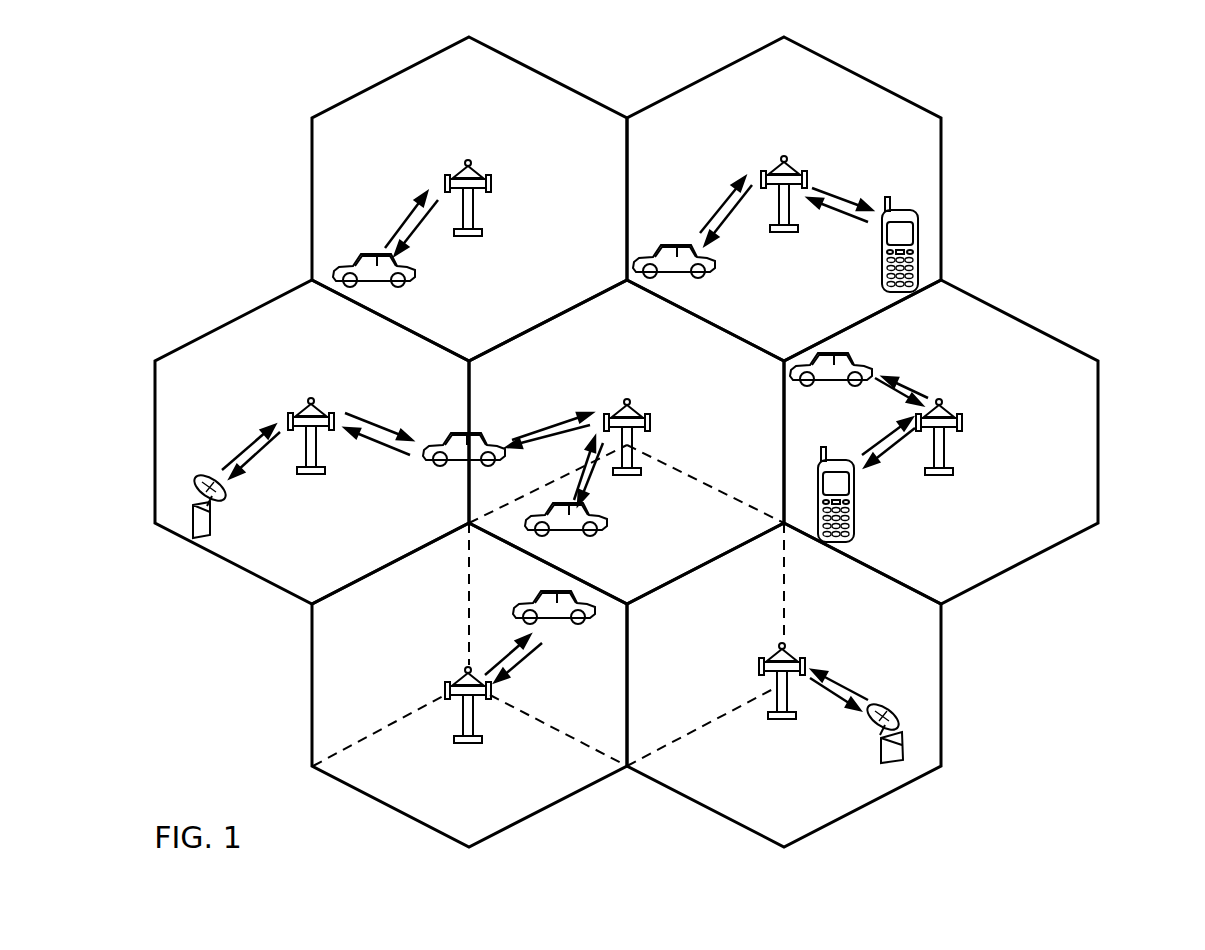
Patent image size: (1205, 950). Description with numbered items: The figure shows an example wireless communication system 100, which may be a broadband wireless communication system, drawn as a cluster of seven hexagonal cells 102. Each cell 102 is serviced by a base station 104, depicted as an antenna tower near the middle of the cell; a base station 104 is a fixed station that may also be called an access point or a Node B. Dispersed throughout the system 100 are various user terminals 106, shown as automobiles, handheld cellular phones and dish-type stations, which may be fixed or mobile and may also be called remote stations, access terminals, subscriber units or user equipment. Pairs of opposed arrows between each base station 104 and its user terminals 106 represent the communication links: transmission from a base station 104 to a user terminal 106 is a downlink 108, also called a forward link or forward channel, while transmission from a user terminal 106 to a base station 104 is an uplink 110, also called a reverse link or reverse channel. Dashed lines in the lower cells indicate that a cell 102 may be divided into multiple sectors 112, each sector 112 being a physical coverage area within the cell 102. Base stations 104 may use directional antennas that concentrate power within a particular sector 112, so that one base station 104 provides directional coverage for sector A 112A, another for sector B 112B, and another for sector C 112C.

The wireless communication system 100 is at (1082, 121).
The cell 102 is at (397, 75).
The base station 104 is at (468, 159).
The user terminal 106 is at (410, 285).
The downlink 108 is at (412, 236).
The uplink 110 is at (405, 216).
The sector 112 is at (527, 800).
The sector A 112A is at (606, 742).
The sector B 112B is at (690, 527).
The sector C 112C is at (650, 667).